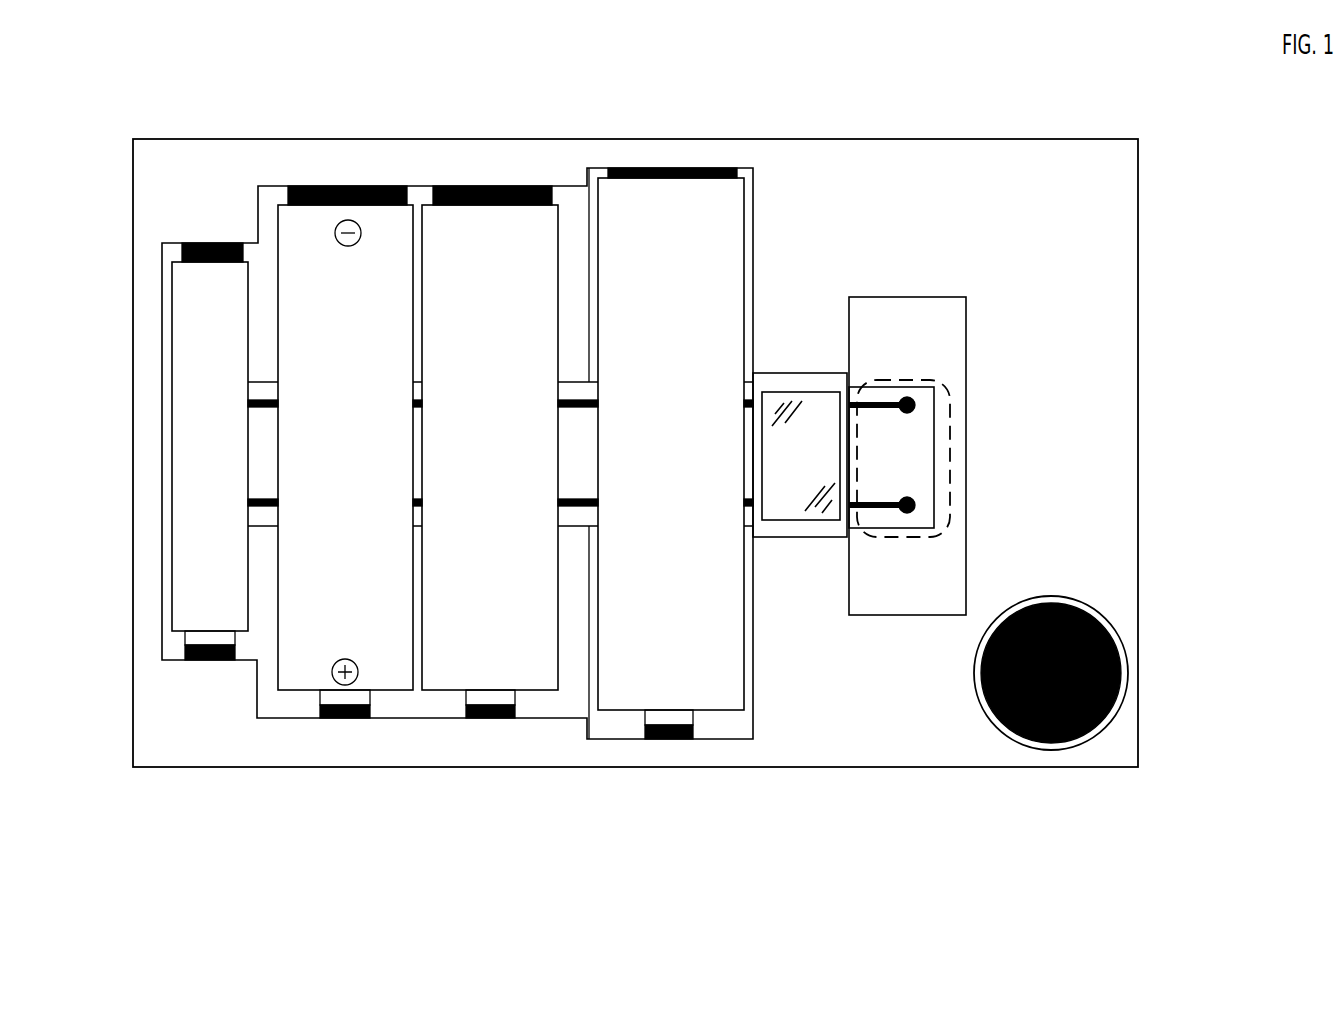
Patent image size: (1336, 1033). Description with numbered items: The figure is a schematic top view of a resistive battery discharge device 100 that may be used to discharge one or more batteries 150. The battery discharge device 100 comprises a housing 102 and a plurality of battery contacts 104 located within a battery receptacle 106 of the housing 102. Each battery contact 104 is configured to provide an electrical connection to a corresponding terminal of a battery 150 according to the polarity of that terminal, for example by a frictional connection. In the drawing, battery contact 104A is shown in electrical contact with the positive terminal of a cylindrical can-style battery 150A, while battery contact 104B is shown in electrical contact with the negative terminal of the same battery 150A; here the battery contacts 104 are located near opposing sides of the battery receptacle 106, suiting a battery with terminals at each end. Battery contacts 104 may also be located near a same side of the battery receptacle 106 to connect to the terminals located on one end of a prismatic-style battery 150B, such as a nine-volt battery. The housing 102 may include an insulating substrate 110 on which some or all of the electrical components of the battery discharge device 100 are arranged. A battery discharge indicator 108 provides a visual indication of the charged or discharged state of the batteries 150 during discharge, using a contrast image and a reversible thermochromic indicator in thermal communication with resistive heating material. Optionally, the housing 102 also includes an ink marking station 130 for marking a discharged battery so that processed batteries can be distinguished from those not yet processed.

The battery discharge device 100 is at (169, 97).
The housing 102 is at (866, 139).
The battery contacts 104 is at (495, 718).
The battery contact 104A is at (335, 718).
The battery contact 104B is at (345, 186).
The battery receptacle 106 is at (167, 243).
The battery discharge indicator 108 is at (790, 520).
The insulating substrate 110 is at (862, 379).
The ink marking station 130 is at (1057, 585).
The batteries 150 is at (218, 463).
The cylindrical can-style battery 150A is at (363, 463).
The prismatic-style battery 150B is at (957, 463).